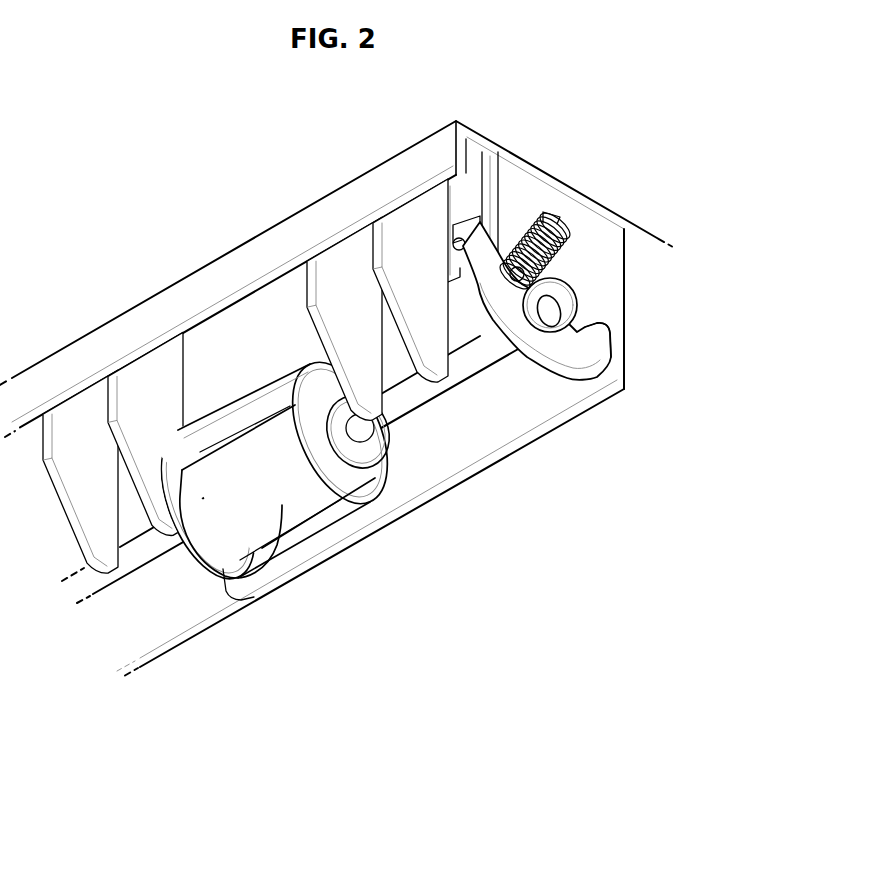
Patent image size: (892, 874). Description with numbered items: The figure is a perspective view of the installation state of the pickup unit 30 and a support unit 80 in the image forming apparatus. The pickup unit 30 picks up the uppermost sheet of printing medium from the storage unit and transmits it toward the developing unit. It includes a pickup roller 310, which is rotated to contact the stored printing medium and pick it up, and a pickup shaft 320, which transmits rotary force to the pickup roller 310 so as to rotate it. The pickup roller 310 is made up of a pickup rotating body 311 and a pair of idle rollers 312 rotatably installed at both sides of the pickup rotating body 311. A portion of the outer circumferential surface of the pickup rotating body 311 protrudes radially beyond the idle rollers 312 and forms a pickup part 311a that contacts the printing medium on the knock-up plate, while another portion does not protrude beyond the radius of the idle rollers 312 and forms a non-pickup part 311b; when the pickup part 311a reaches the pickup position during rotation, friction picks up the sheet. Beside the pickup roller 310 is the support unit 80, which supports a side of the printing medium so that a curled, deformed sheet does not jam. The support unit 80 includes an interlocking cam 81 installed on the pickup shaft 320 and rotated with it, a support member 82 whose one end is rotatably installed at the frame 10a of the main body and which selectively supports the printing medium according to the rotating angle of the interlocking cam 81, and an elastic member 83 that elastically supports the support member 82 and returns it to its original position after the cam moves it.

The frame 10a is at (557, 178).
The pickup unit 30 is at (343, 486).
The pickup roller 310 is at (307, 464).
The pickup rotating body 311 is at (274, 441).
The pickup part 311a is at (250, 413).
The non-pickup part 311b is at (268, 518).
The idle rollers 312 is at (397, 475).
The pickup shaft 320 is at (100, 585).
The support unit 80 is at (567, 319).
The interlocking cam 81 is at (560, 301).
The support member 82 is at (593, 343).
The elastic member 83 is at (567, 232).